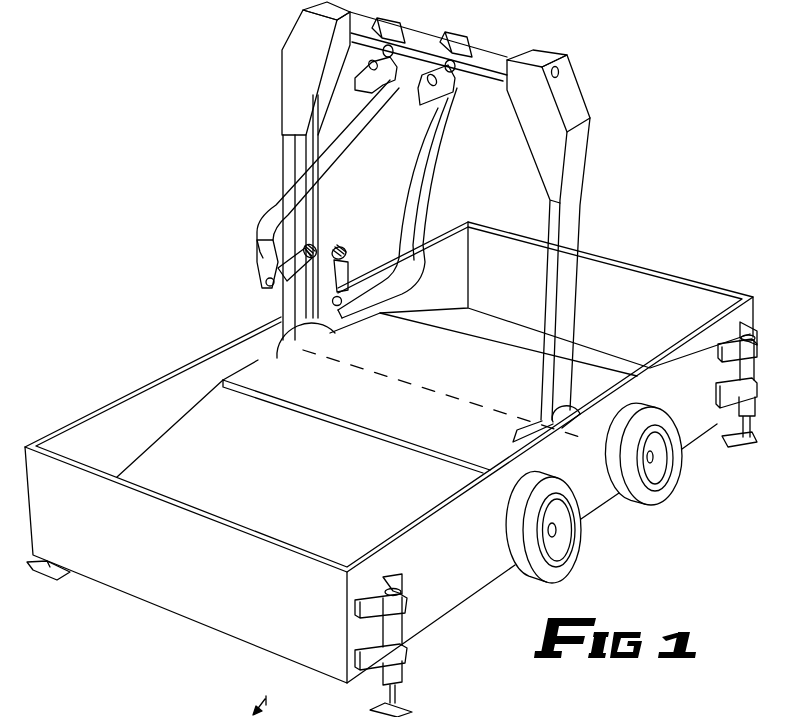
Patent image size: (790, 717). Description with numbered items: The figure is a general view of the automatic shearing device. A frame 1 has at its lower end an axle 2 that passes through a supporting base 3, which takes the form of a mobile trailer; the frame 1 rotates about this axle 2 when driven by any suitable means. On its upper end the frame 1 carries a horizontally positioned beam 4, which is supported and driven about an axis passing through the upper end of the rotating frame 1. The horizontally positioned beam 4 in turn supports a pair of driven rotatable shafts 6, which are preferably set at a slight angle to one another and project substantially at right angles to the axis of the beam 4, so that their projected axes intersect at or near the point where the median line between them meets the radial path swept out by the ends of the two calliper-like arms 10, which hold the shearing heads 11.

The frame 1 is at (572, 223).
The axle 2 is at (388, 371).
The supporting base 3 is at (440, 593).
The horizontally positioned beam 4 is at (488, 52).
The driven rotatable shafts 6 is at (393, 56).
The calliper-like arms 10 is at (300, 175).
The shearing heads 11 is at (333, 247).